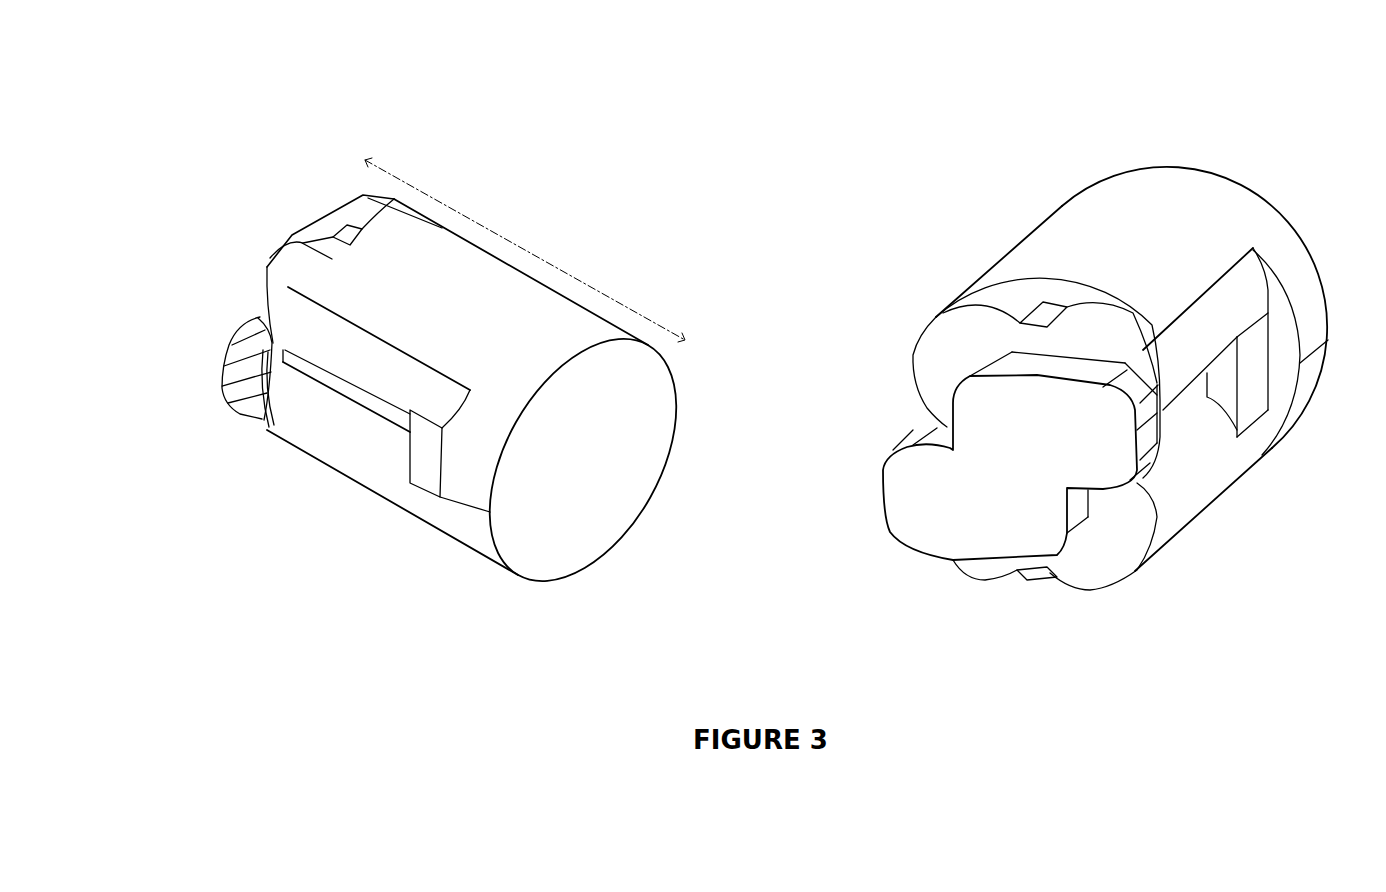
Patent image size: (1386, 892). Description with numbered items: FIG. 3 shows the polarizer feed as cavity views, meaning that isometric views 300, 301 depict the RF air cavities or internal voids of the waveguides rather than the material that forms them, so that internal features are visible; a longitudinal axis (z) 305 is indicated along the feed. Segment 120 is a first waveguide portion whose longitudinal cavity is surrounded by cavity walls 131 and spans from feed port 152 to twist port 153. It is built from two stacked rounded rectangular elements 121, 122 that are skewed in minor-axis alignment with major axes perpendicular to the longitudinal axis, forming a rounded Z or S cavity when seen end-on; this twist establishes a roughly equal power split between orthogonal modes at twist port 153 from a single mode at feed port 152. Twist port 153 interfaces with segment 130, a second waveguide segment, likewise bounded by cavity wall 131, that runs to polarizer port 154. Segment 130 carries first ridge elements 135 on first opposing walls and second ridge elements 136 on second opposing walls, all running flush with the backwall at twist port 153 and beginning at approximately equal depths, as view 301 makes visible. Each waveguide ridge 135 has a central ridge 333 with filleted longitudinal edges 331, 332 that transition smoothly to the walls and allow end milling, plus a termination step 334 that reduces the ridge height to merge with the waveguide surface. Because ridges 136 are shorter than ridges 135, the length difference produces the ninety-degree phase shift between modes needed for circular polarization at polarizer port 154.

The isometric view 300 is at (233, 143).
The isometric view 301 is at (927, 156).
The longitudinal axis (z) 305 is at (460, 181).
The segment 120 is at (187, 435).
The rounded rectangular element 121 is at (278, 265).
The rounded rectangular element 122 is at (241, 358).
The segment 130 is at (178, 452).
The cavity walls 131 is at (351, 464).
The waveguide ridges 135 is at (333, 389).
The waveguide ridges 136 is at (349, 238).
The feed port 152 is at (900, 497).
The twist port 153 is at (272, 331).
The polarizer port 154 is at (1306, 245).
The filleted longitudinal edge 331 is at (346, 402).
The filleted longitudinal edge 332 is at (370, 354).
The central ridge 333 is at (346, 382).
The termination step 334 is at (450, 461).